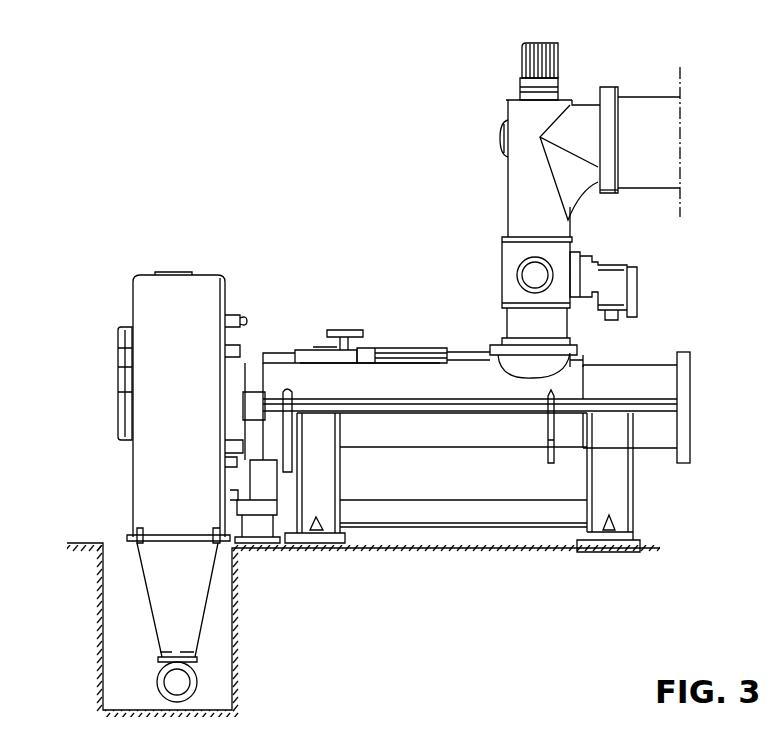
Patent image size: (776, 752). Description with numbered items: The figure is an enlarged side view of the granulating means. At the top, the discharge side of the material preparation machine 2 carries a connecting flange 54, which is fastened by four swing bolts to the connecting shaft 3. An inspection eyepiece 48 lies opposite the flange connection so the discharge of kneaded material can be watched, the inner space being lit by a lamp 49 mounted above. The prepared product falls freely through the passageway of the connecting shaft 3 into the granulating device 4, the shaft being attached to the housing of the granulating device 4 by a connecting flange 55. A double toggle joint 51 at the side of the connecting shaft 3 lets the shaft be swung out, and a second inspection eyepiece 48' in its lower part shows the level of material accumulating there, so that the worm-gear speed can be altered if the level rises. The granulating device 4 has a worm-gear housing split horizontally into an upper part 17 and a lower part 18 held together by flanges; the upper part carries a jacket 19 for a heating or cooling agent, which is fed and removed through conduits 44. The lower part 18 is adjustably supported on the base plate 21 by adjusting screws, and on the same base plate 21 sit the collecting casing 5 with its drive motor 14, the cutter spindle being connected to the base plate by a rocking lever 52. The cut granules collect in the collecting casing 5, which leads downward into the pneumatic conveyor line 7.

The material preparation machine 2 is at (655, 93).
The connecting shaft 3 is at (523, 130).
The granulating device 4 is at (673, 405).
The collecting casing 5 is at (206, 293).
The pneumatic conveyor line 7 is at (183, 677).
The drive motor 14 is at (373, 350).
The upper part of worm-gear housing 17 is at (645, 374).
The lower part of worm-gear housing 18 is at (647, 433).
The jacket 19 is at (367, 378).
The base plate 21 is at (443, 513).
The conduits 44 is at (257, 412).
The inspection eyepiece 48 is at (431, 148).
The second inspection eyepiece 48' is at (468, 261).
The lamp 49 is at (558, 55).
The double toggle joint 51 is at (622, 320).
The rocking lever 52 is at (258, 495).
The connecting flange 54 is at (617, 193).
The connecting flange 55 is at (493, 350).